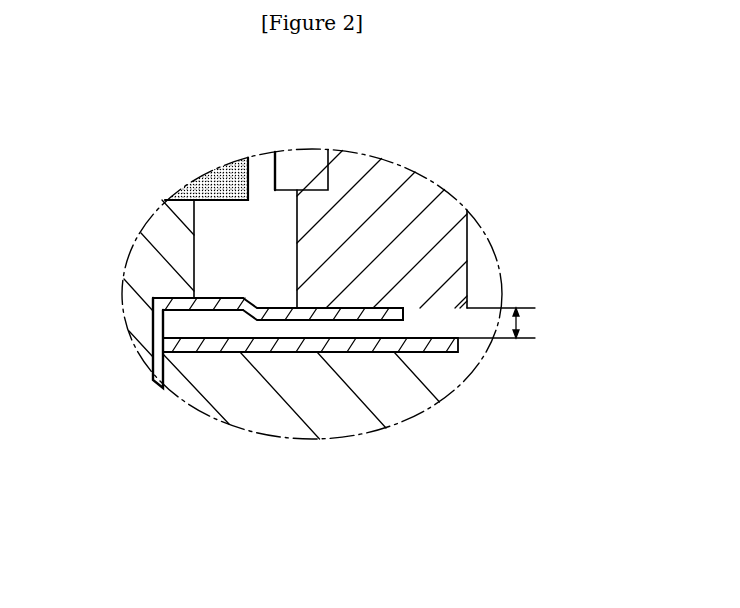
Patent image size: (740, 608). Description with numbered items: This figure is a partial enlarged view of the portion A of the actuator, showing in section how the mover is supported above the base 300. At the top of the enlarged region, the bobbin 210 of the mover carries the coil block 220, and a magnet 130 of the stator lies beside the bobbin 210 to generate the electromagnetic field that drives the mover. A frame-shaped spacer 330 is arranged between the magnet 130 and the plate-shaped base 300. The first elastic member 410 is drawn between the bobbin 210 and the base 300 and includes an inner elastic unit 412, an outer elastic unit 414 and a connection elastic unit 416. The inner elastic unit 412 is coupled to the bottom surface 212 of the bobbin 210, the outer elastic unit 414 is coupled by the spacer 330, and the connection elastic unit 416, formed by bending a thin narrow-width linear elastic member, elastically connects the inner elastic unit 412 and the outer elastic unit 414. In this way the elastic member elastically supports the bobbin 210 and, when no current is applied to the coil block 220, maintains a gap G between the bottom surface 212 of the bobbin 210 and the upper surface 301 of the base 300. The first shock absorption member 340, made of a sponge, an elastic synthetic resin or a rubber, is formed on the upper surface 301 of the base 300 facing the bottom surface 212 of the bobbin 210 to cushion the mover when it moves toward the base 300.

The magnet 130 is at (209, 186).
The coil block 220 is at (300, 158).
The bobbin 210 is at (387, 186).
The portion A is at (457, 197).
The spacer 330 is at (136, 232).
The outer elastic unit 414 is at (158, 293).
The bottom surface 212 is at (447, 303).
The gap G is at (508, 325).
The upper surface 301 is at (410, 355).
The first elastic member 410 is at (164, 310).
The connection elastic unit 416 is at (217, 313).
The first shock absorption member 340 is at (277, 353).
The inner elastic unit 412 is at (357, 313).
The base 300 is at (422, 405).